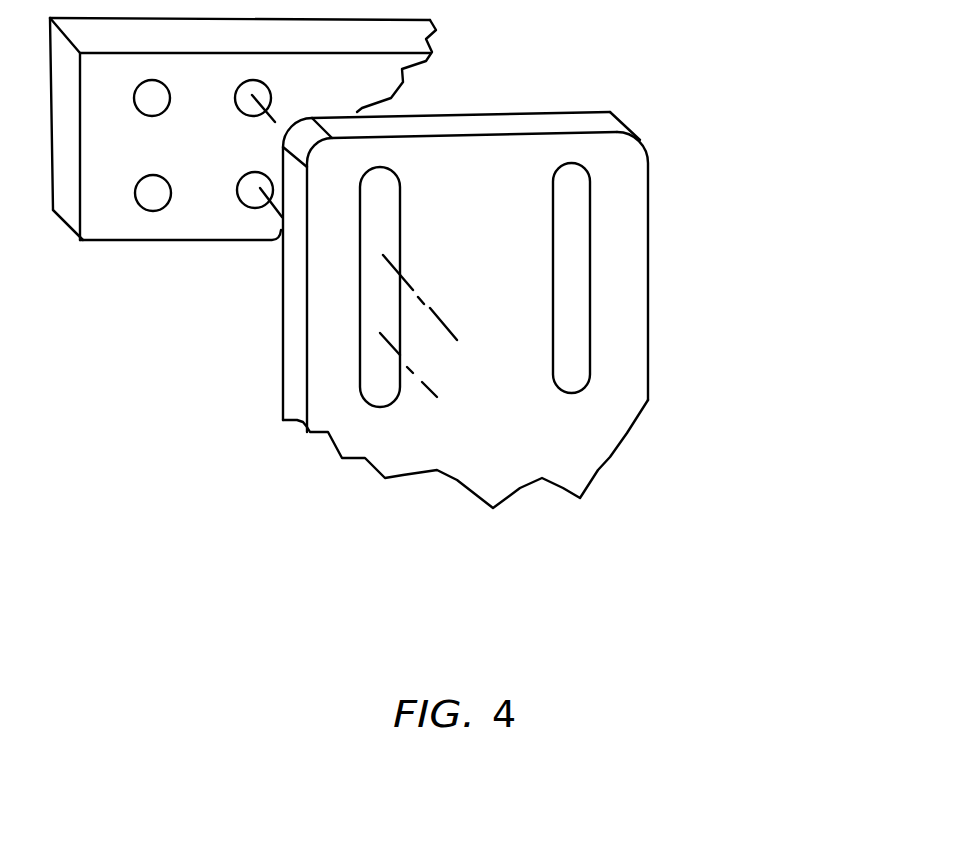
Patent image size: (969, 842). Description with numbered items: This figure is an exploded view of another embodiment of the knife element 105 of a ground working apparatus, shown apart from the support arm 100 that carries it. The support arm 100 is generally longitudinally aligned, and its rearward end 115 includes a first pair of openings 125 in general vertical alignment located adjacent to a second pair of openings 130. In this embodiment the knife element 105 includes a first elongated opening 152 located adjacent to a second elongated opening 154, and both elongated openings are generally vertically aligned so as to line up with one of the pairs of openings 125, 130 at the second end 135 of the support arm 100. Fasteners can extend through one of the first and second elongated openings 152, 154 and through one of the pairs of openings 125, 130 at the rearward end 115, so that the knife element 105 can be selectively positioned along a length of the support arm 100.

The support arm 100 is at (163, 240).
The knife element 105 is at (673, 268).
The rearward end 115 is at (66, 252).
The first pair of openings 125 is at (233, 172).
The second pair of openings 130 is at (133, 115).
The second end 135 is at (730, 305).
The first elongated opening 152 is at (600, 210).
The second elongated opening 154 is at (403, 197).